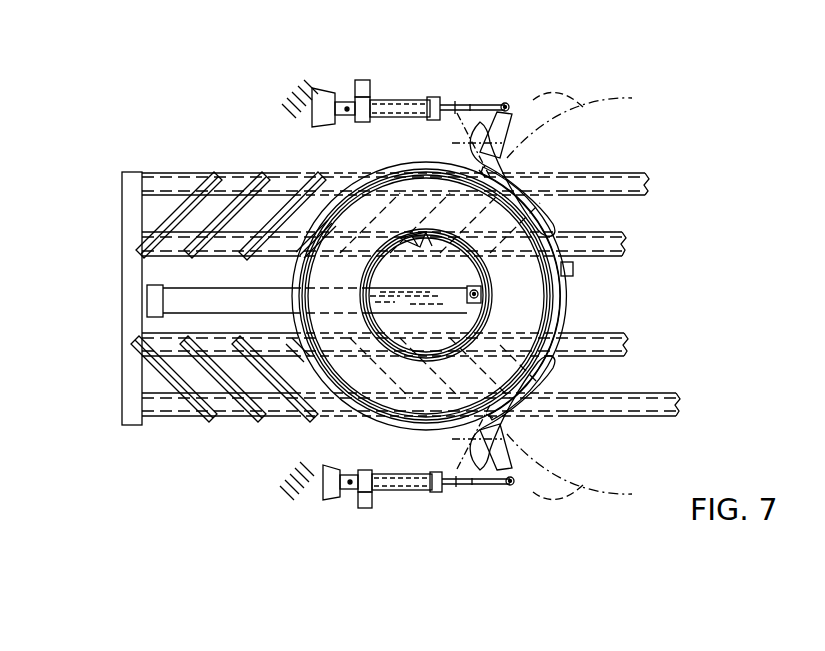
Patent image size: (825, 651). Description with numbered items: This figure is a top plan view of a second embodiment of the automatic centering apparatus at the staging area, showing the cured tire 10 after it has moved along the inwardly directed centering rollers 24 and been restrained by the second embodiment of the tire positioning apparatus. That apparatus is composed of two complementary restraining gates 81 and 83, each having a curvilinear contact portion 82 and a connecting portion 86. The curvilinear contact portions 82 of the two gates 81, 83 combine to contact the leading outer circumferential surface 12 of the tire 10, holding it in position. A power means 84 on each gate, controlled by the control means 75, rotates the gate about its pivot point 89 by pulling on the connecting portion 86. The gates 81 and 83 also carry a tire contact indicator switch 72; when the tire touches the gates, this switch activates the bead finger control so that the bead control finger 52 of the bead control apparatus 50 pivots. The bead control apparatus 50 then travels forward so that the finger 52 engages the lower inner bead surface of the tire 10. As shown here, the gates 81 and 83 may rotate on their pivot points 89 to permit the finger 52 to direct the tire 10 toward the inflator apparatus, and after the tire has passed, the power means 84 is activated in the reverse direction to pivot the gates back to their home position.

The cured tire 10 is at (417, 212).
The outer circumferential surface 12 is at (563, 292).
The centering rollers 24 is at (290, 405).
The bead control apparatus 50 is at (131, 303).
The bead control finger 52 is at (470, 294).
The tire contact indicator switch 72 is at (573, 274).
The control means 75 is at (362, 80).
The restraining gate 81 is at (572, 424).
The curvilinear contact portion 82 is at (566, 242).
The restraining gate 83 is at (588, 158).
The power means 84 is at (466, 72).
The connecting portion 86 is at (505, 128).
The pivot point 89 is at (546, 162).